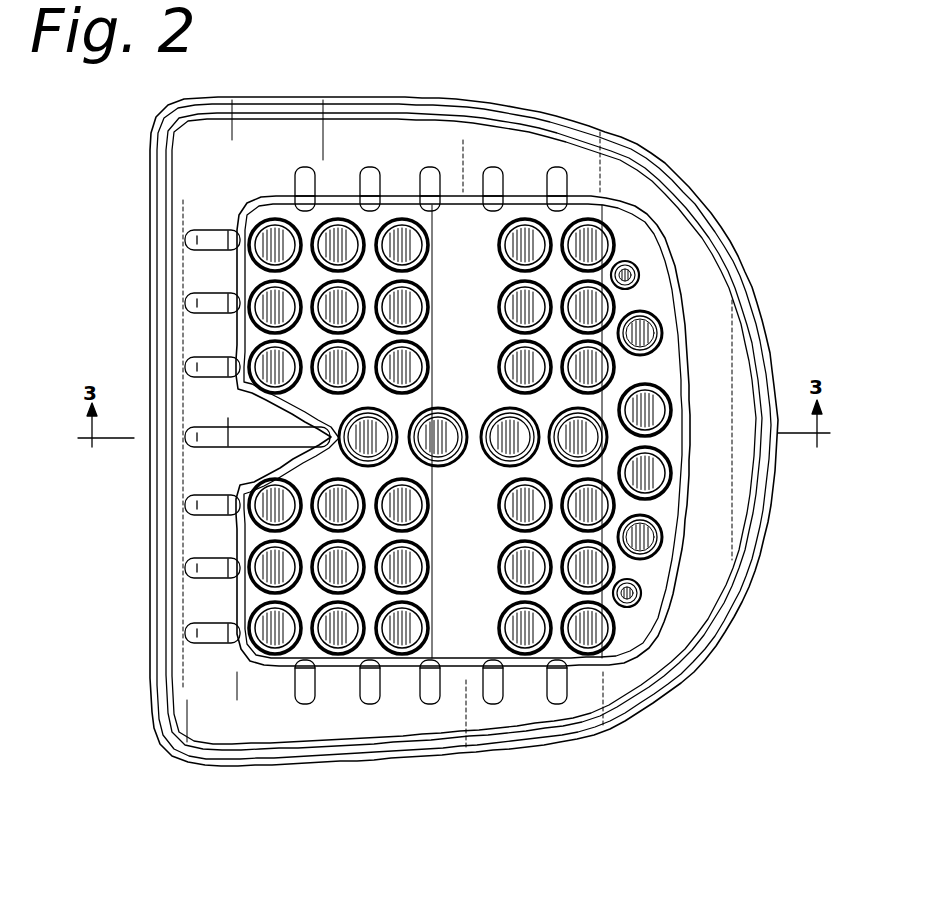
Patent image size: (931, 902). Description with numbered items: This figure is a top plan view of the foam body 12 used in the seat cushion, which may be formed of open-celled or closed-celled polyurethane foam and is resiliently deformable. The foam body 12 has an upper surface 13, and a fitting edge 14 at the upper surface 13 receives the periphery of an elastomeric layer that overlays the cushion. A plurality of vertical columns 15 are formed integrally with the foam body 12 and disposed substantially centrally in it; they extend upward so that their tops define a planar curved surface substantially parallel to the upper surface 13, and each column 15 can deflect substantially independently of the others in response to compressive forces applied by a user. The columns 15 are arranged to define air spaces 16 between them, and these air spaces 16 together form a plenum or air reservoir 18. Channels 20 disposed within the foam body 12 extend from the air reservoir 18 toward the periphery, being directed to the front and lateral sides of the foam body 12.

The foam body 12 is at (716, 699).
The upper surface 13 is at (680, 240).
The fitting edge 14 is at (643, 228).
The vertical columns 15 is at (667, 383).
The air spaces 16 is at (658, 507).
The air reservoir 18 is at (483, 553).
The channels 20 is at (187, 438).